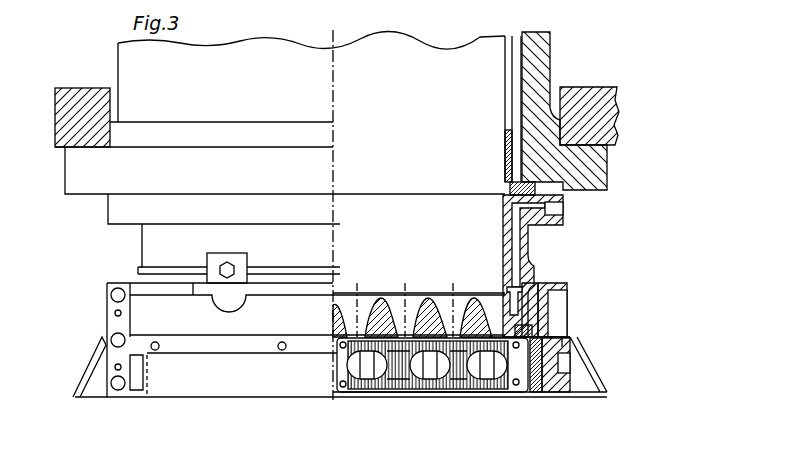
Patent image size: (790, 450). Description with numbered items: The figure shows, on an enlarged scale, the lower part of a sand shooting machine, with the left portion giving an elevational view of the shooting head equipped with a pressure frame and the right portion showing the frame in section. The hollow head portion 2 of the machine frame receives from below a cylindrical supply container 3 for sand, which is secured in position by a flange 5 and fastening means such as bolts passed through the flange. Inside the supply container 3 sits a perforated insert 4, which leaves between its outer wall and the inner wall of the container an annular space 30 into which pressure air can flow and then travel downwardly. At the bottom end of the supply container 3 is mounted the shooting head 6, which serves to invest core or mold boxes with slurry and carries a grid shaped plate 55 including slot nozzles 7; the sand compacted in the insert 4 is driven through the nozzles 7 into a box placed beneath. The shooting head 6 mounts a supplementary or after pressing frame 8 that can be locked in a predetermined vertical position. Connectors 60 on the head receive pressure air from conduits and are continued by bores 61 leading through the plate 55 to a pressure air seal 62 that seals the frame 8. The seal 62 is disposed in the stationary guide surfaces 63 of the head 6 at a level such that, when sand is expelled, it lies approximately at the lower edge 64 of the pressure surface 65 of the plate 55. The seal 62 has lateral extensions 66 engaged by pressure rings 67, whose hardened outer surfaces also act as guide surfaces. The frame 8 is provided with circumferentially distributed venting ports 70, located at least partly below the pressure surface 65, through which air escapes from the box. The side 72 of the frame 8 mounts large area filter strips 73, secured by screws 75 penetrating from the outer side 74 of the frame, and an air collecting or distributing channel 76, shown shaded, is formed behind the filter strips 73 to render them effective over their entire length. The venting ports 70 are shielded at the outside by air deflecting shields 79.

The head portion 2 is at (587, 93).
The supply container 3 is at (533, 49).
The perforated insert 4 is at (505, 147).
The flange 5 is at (593, 180).
The shooting head 6 is at (528, 240).
The slot nozzles 7 is at (366, 300).
The pressure frame 8 is at (181, 382).
The annular space 30 is at (517, 73).
The grid shaped plate 55 is at (447, 322).
The connectors 60 is at (563, 210).
The bores 61 is at (512, 230).
The pressure air seal 62 is at (545, 311).
The stationary guide surfaces 63 is at (555, 297).
The lower edge 64 is at (517, 388).
The pressure surface 65 is at (452, 345).
The lateral extensions 66 is at (540, 330).
The pressure rings 67 is at (570, 340).
The venting ports 70 is at (437, 390).
The side of frame 72 is at (531, 393).
The filter strips 73 is at (383, 390).
The outer side of frame 74 is at (584, 398).
The screws 75 is at (563, 394).
The air collecting or distributing channel 76 is at (412, 388).
The air deflecting shields 79 is at (592, 377).